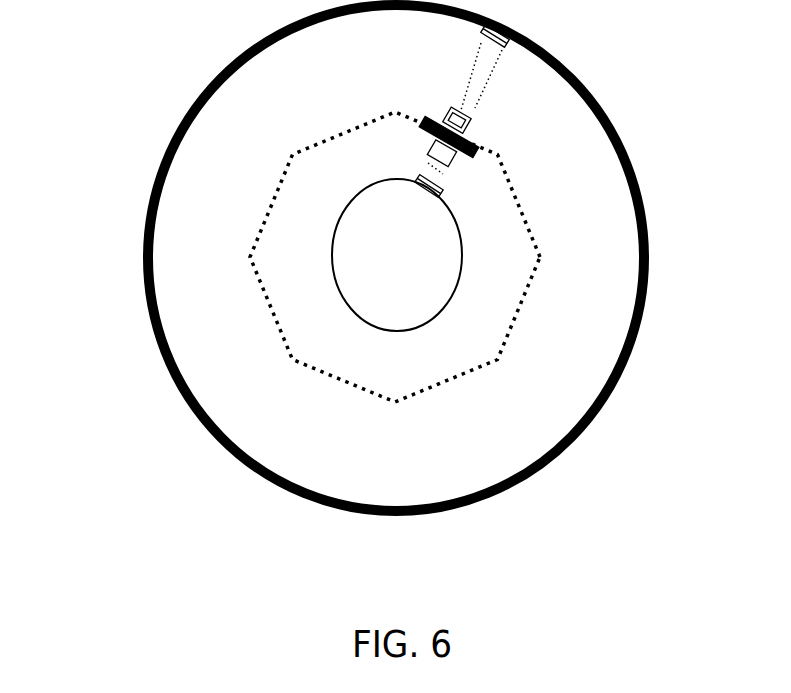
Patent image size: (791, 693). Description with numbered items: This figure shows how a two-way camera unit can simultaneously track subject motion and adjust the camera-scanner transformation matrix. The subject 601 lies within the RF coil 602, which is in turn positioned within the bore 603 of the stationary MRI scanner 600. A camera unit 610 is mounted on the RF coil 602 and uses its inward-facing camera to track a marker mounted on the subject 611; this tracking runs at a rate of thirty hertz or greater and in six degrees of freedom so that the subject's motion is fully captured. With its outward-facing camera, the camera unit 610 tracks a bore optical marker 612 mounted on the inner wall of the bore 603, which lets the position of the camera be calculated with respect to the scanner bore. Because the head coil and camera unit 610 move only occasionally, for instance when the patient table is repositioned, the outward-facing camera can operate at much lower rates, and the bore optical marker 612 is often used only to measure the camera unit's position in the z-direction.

The stationary MRI scanner 600 is at (152, 462).
The subject 601 is at (407, 226).
The RF coil 602 is at (328, 138).
The bore 603 is at (637, 360).
The camera unit 610 is at (465, 133).
The marker mounted on the subject 611 is at (442, 192).
The bore optical marker 612 is at (480, 31).